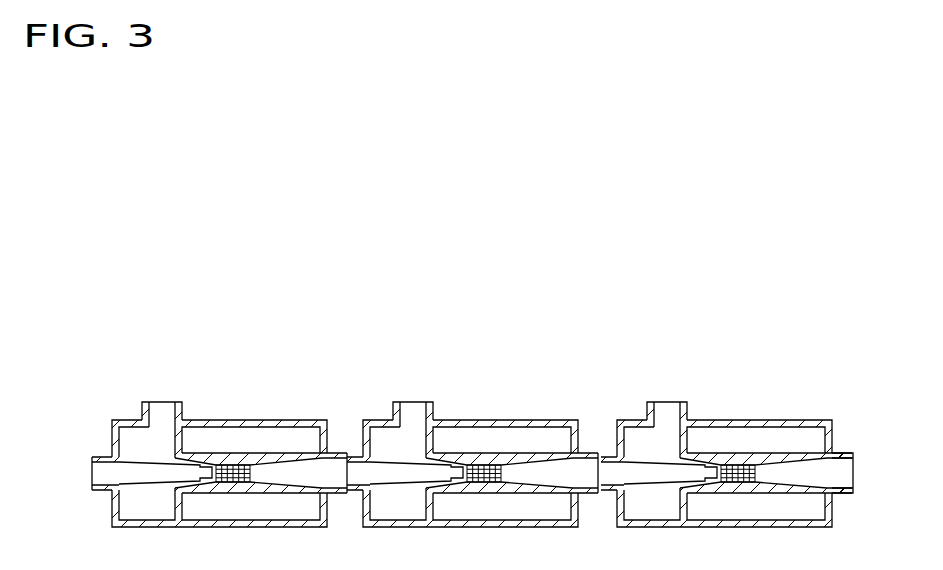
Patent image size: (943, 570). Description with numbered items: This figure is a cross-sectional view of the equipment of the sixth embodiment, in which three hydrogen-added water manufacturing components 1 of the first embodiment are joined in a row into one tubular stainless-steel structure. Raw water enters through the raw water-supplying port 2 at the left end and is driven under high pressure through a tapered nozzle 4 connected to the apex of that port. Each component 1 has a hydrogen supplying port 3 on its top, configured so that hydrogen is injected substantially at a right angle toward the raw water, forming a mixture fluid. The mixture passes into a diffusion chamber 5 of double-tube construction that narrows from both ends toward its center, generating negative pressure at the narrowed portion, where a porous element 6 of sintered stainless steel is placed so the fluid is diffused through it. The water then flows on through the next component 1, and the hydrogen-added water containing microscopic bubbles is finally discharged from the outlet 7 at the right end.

The hydrogen-added water manufacturing equipment 1 is at (450, 320).
The raw water-supplying port 2 is at (93, 455).
The hydrogen supplying port 3 is at (160, 411).
The tapered nozzle 4 is at (133, 470).
The diffusion chamber 5 is at (213, 463).
The porous element 6 is at (246, 468).
The outlet 7 is at (851, 455).